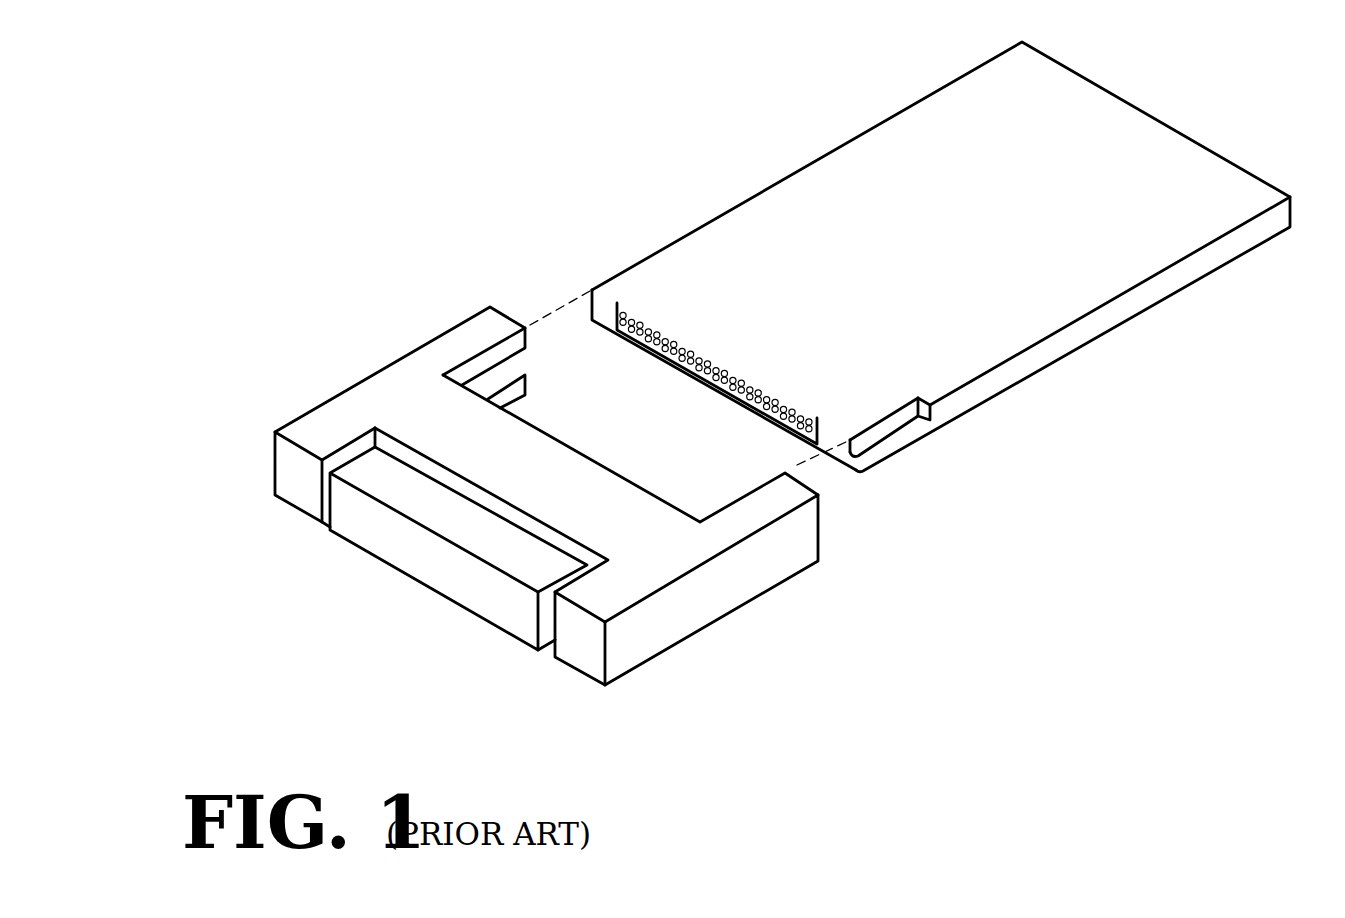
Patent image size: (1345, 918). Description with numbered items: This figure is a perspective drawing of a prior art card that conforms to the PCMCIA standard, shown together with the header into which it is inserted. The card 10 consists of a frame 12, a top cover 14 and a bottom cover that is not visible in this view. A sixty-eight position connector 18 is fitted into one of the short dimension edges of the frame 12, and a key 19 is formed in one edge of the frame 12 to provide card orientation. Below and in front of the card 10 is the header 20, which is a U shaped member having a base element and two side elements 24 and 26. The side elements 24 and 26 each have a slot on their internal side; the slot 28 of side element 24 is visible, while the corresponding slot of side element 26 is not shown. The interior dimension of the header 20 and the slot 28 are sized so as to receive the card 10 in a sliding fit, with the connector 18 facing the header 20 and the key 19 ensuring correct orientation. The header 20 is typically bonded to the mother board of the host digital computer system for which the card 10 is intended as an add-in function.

The card 10 is at (931, 257).
The frame 12 is at (1242, 246).
The top cover 14 is at (930, 108).
The 68 position connector 18 is at (612, 316).
The key 19 is at (900, 430).
The header 20 is at (573, 484).
The side element 24 is at (450, 324).
The side element 26 is at (785, 567).
The slot 28 is at (502, 368).